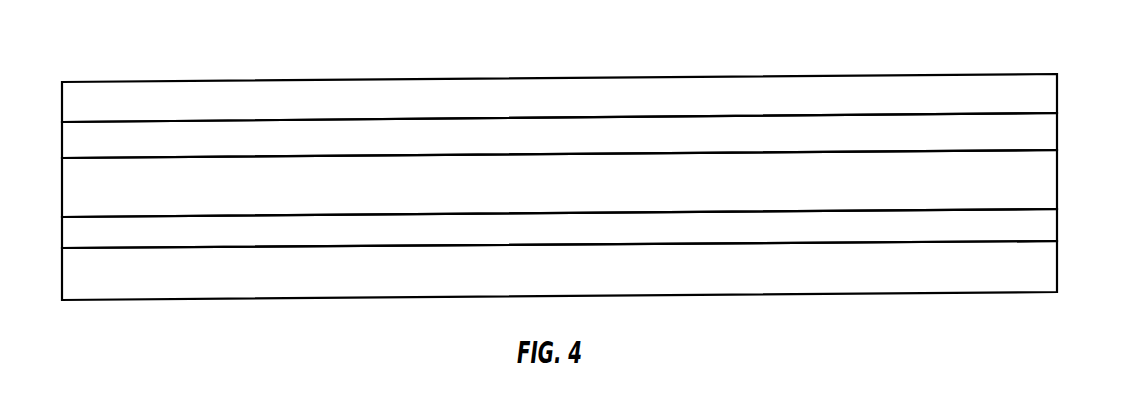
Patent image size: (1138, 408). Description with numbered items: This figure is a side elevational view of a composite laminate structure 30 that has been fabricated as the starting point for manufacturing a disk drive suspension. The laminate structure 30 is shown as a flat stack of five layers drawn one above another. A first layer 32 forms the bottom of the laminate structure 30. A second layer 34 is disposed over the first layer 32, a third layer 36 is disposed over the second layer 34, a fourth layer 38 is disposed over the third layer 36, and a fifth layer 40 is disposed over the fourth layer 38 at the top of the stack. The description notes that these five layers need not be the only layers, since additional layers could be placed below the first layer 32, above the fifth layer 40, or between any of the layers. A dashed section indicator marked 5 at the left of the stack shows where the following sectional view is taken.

The composite laminate structure 30 is at (589, 156).
The first layer 32 is at (1057, 264).
The second layer 34 is at (1057, 221).
The third layer 36 is at (1057, 168).
The fourth layer 38 is at (1057, 126).
The fifth layer 40 is at (1057, 96).
The section line indicator for FIG. 5 is at (30, 93).